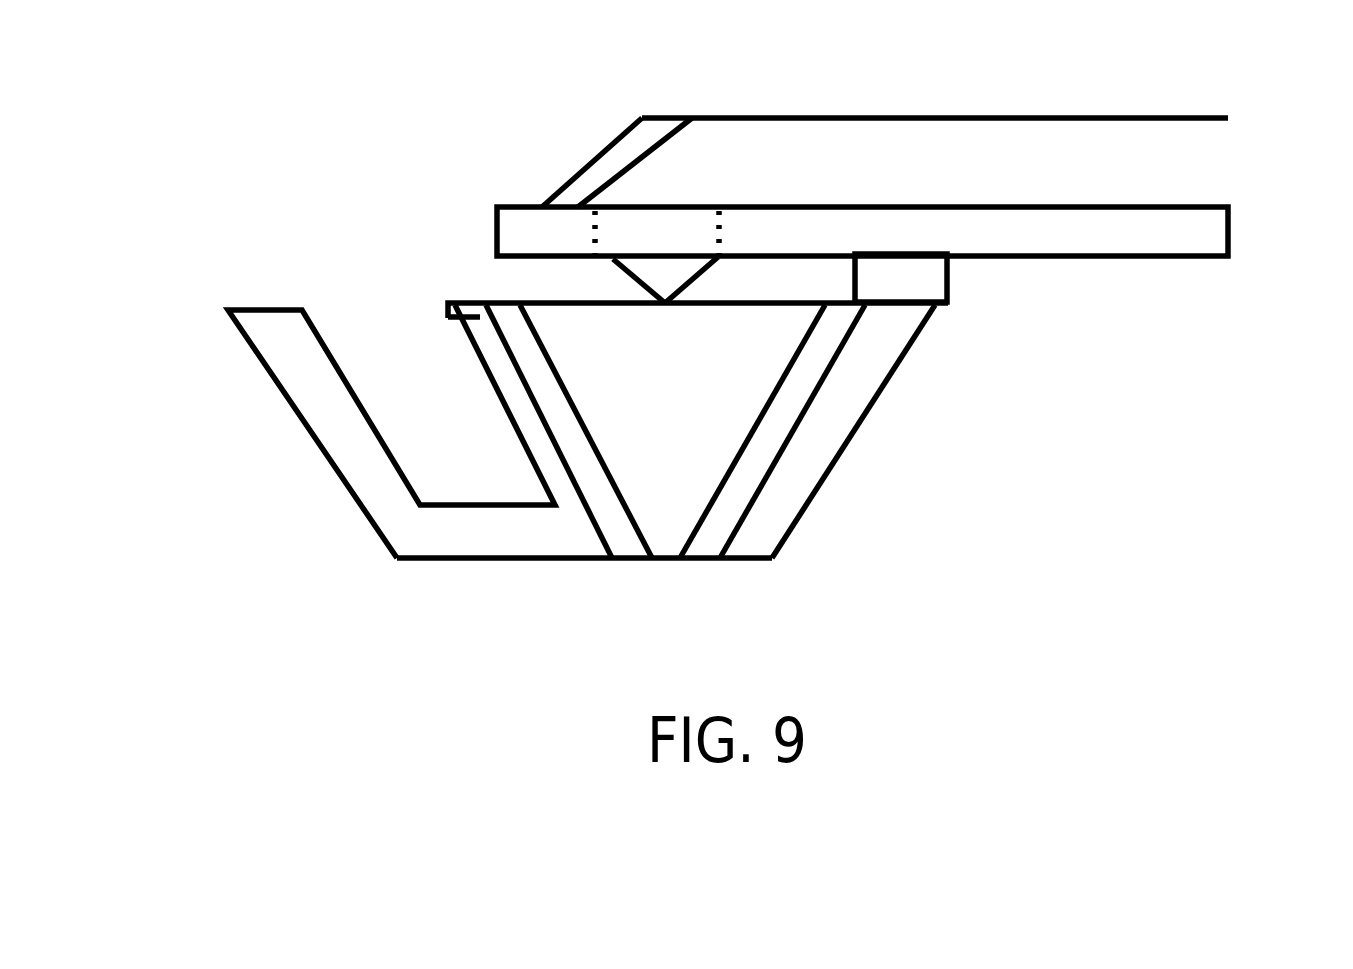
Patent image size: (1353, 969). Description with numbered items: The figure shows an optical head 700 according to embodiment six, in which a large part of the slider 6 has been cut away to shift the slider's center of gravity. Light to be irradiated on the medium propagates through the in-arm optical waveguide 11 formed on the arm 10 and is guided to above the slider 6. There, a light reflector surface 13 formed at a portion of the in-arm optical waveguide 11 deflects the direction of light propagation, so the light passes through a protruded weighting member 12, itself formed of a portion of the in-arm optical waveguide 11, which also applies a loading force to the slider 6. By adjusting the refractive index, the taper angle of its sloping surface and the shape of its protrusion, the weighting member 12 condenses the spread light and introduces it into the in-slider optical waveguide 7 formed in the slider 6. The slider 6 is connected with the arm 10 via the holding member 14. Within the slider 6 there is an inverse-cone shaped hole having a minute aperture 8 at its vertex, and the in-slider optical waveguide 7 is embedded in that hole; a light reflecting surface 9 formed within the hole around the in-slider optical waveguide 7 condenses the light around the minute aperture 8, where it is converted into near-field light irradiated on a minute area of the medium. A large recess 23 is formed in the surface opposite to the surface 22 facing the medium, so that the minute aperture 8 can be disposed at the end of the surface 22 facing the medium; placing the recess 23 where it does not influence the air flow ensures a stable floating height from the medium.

The optical head 700 is at (312, 196).
The in-arm optical waveguide 11 is at (1092, 132).
The light reflector surface 13 is at (595, 163).
The arm 10 is at (1150, 222).
The holding member 14 is at (923, 285).
The weighting member 12 is at (630, 272).
The slider 6 is at (418, 533).
The recess 23 is at (435, 438).
The in-slider optical waveguide 7 is at (672, 442).
The light reflecting surface 9 is at (732, 518).
The surface facing the medium 22 is at (515, 565).
The minute aperture 8 is at (668, 562).